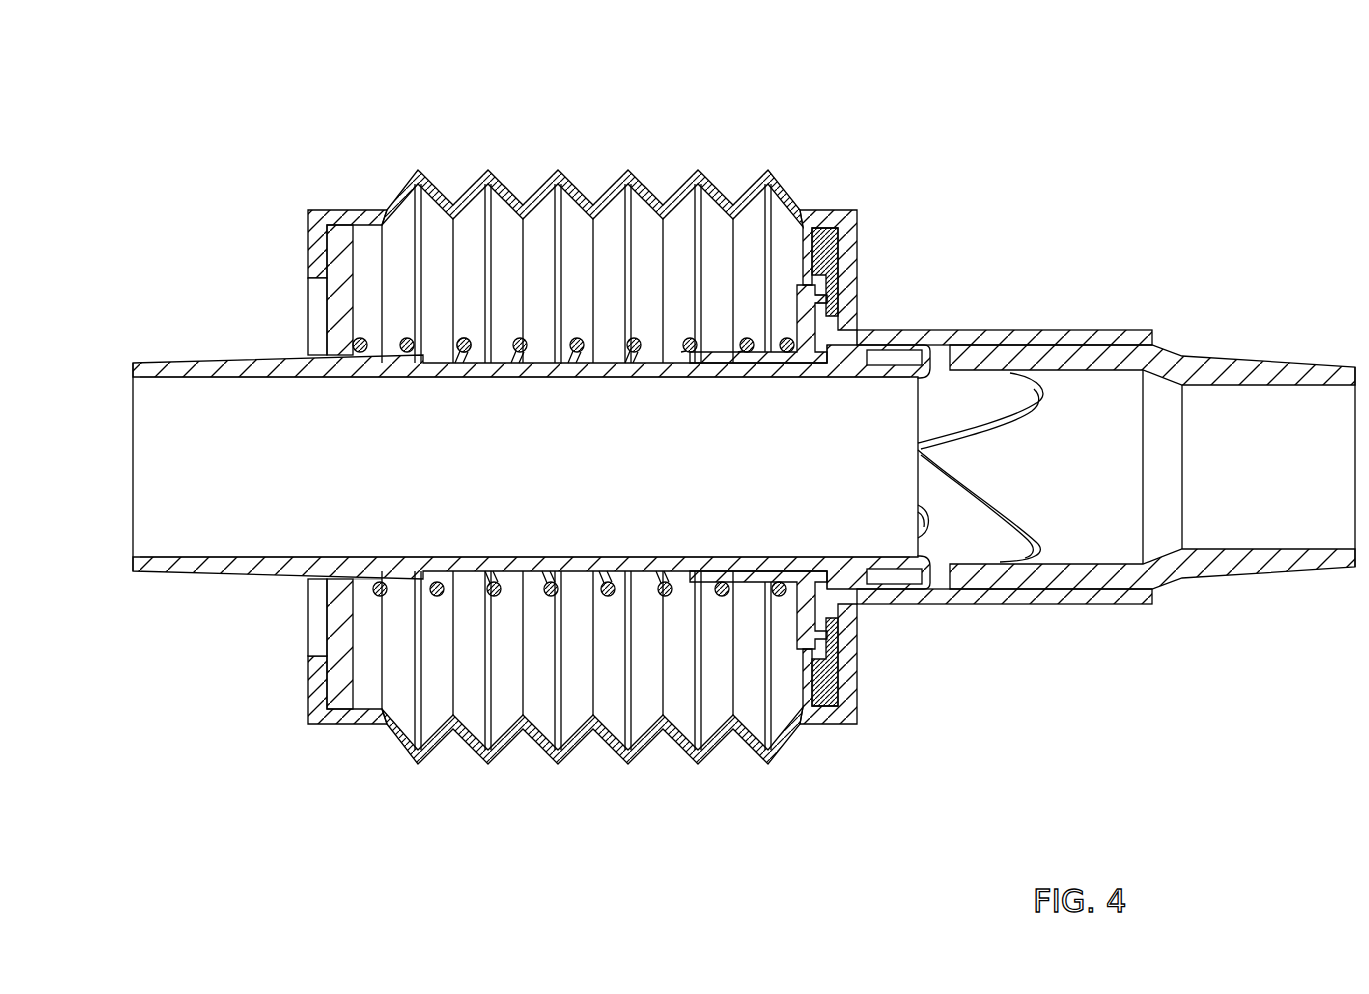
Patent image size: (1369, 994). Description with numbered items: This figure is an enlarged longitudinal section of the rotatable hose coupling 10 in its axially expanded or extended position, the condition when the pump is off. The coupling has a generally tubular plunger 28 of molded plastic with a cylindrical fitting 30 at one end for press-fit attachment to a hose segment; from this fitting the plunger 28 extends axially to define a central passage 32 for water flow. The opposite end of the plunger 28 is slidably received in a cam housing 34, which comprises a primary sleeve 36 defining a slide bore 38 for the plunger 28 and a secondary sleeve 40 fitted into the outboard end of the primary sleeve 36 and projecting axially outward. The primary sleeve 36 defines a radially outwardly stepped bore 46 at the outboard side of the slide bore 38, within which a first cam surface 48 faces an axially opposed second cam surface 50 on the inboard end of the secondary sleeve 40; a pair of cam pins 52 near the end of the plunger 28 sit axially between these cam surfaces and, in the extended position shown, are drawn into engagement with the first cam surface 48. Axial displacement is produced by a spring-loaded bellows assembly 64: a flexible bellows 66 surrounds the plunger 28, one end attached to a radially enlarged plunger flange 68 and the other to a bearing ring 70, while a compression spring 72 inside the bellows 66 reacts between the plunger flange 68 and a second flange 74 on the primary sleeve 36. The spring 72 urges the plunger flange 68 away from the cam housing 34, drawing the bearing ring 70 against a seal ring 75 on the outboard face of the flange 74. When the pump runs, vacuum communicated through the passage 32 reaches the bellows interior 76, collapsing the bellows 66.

The rotatable hose coupling 10 is at (981, 113).
The plunger 28 is at (604, 336).
The cylindrical fitting 30 is at (185, 363).
The central passage 32 is at (550, 380).
The cam housing 34 is at (1010, 230).
The primary sleeve 36 is at (1026, 603).
The slide bore 38 is at (745, 382).
The secondary sleeve 40 is at (1128, 603).
The stepped bore 46 is at (937, 575).
The first cam surface 48 is at (890, 357).
The second cam surface 50 is at (980, 418).
The cam pins 52 is at (848, 365).
The spring-loaded bellows assembly 64 is at (578, 768).
The flexible bellows 66 is at (558, 172).
The plunger flange 68 is at (342, 298).
The bearing ring 70 is at (848, 278).
The compression spring 72 is at (466, 338).
The second flange 74 is at (822, 625).
The seal ring 75 is at (842, 300).
The bellows interior 76 is at (460, 664).